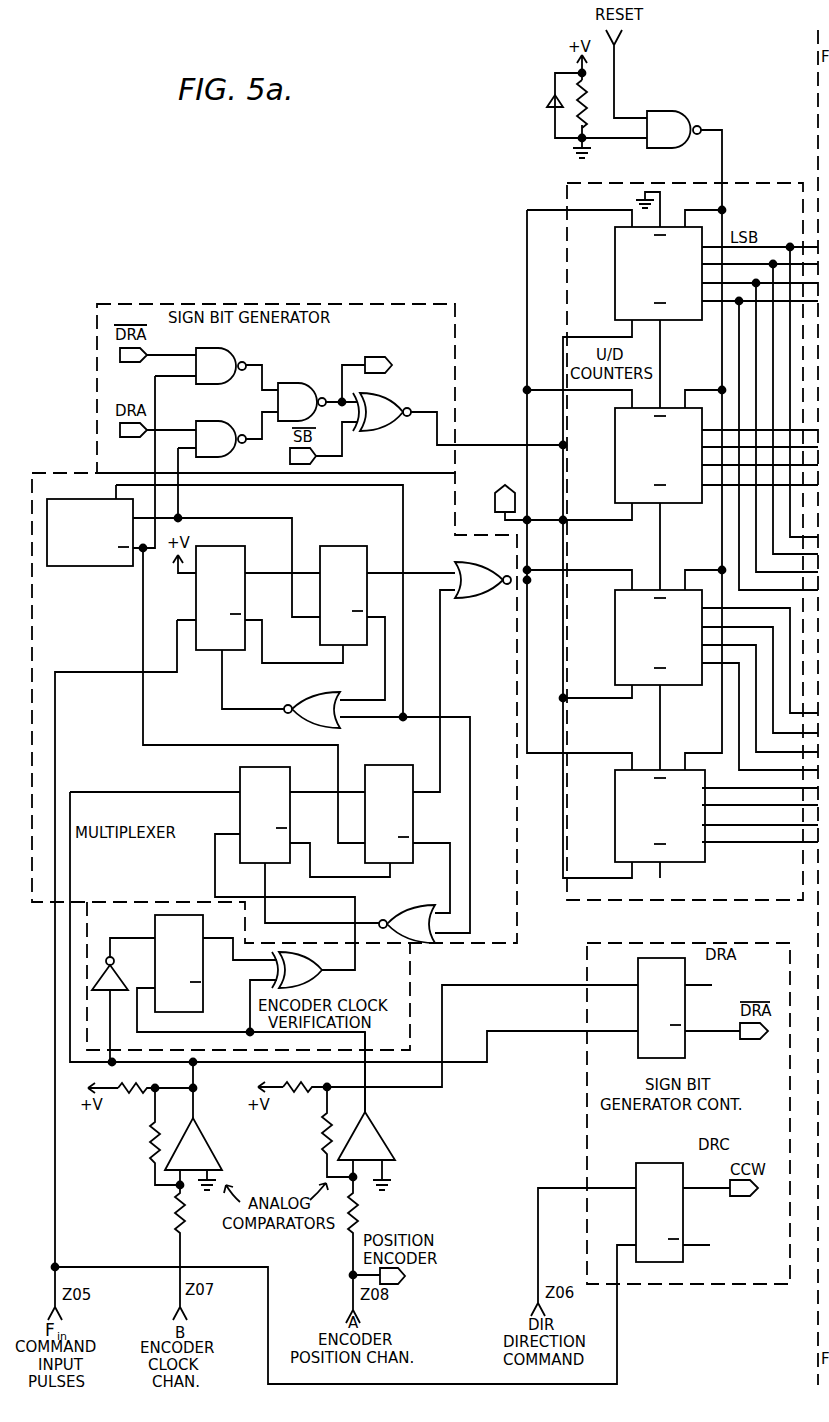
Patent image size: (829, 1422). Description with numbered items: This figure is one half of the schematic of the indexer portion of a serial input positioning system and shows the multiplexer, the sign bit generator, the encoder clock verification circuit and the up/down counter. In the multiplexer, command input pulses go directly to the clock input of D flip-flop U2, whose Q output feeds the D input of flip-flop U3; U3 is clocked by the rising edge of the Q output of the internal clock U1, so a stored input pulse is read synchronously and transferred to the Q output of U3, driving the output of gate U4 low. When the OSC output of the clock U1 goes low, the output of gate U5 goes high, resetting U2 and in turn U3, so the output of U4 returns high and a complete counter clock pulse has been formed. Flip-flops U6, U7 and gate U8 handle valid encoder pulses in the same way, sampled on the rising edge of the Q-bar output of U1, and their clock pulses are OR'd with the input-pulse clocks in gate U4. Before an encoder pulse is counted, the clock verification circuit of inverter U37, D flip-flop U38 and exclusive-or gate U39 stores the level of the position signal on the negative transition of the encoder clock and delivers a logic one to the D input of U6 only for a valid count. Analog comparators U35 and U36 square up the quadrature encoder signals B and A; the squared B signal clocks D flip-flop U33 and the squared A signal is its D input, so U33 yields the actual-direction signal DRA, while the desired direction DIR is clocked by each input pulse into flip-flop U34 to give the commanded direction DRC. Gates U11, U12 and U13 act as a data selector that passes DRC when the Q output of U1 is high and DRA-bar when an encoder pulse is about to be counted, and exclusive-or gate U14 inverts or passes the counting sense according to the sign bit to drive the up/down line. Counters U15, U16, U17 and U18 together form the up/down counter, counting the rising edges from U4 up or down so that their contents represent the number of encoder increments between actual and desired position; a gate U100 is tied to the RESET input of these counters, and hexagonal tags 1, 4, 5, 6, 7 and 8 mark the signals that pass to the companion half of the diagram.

The internal clock U1 is at (90, 532).
The D flip-flop U2 is at (220, 598).
The flip-flop U3 is at (343, 595).
The gate U4 is at (483, 580).
The gate U5 is at (312, 710).
The flip-flop U6 is at (265, 815).
The flip-flop U7 is at (389, 814).
The gate U8 is at (407, 924).
The gate U11 is at (221, 366).
The gate U12 is at (221, 439).
The gate U13 is at (302, 402).
The exclusive or gate U14 is at (382, 412).
The up/down counter U15 is at (658, 273).
The up/down counter U16 is at (658, 455).
The up/down counter U17 is at (658, 637).
The up/down counter U18 is at (660, 816).
The D type flip-flop U33 is at (661, 1008).
The D type flip-flop U34 is at (659, 1212).
The analog comparator U35 is at (200, 1148).
The analog comparator U36 is at (378, 1136).
The inverter U37 is at (118, 978).
The D flip-flop U38 is at (179, 964).
The exclusive-or gate U39 is at (297, 970).
The NAND gate U100 is at (674, 129).
The position encoder connector 1 is at (392, 1276).
The DRA-bar signal connector 4 is at (444, 694).
The DRA signal connector 5 is at (439, 810).
The signal connector 6 is at (378, 365).
The SB-bar signal connector 7 is at (303, 456).
The clock signal connector 8 is at (505, 498).